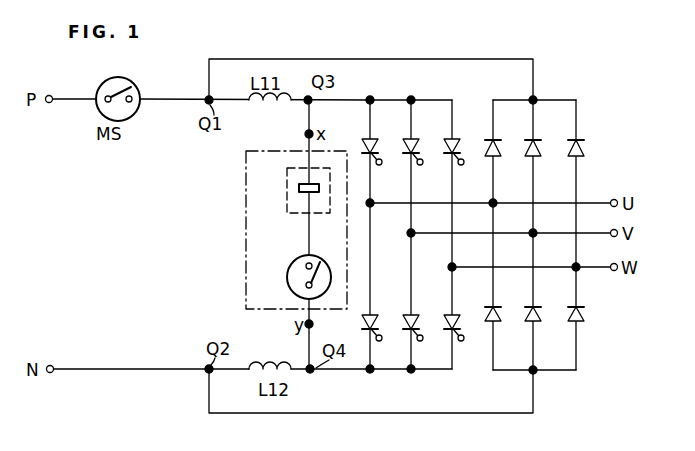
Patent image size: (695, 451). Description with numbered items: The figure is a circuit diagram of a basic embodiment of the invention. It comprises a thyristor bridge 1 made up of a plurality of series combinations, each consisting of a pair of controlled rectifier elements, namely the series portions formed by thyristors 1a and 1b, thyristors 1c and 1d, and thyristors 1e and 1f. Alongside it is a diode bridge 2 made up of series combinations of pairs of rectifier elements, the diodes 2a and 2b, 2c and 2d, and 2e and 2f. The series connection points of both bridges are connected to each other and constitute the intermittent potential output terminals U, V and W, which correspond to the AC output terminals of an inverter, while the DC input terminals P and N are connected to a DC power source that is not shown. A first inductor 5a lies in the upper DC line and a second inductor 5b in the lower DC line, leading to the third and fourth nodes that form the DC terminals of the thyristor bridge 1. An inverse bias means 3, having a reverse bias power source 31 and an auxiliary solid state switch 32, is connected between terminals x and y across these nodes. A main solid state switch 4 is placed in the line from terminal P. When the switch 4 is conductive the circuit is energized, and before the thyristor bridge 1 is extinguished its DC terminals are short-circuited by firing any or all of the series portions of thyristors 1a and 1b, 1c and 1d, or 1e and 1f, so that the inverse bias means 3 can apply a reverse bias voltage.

The thyristor bridge 1 is at (421, 222).
The thyristor 1a is at (380, 140).
The thyristor 1b is at (381, 315).
The thyristor 1c is at (421, 140).
The thyristor 1d is at (422, 315).
The thyristor 1e is at (462, 140).
The thyristor 1f is at (461, 315).
The diode bridge 2 is at (544, 224).
The rectifier element 2a is at (502, 135).
The rectifier element 2b is at (503, 302).
The rectifier element 2c is at (542, 135).
The rectifier element 2d is at (543, 302).
The rectifier element 2e is at (586, 135).
The rectifier element 2f is at (584, 302).
The inverse bias means 3 is at (276, 234).
The reverse bias power source 31 is at (287, 203).
The auxiliary solid state switch 32 is at (292, 263).
The solid state switch 4 is at (137, 84).
The first inductor 5a is at (262, 74).
The second inductor 5b is at (250, 380).